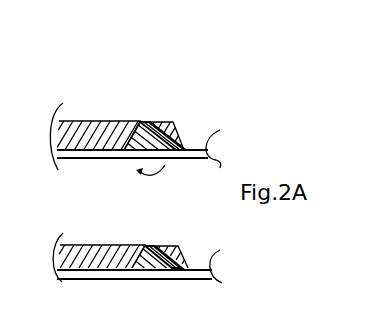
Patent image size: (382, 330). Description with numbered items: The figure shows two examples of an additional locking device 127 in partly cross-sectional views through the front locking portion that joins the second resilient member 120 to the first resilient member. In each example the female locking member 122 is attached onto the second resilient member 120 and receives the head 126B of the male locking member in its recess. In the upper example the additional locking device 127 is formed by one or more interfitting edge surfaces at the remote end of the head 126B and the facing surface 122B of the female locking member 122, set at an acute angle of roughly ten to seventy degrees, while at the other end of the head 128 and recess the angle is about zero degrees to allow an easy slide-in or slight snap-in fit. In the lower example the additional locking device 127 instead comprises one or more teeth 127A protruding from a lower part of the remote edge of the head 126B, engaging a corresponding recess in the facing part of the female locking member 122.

The second resilient member 120 is at (218, 130).
The female locking member 122 is at (167, 122).
The facing surface of the female locking member 122B is at (135, 133).
The head 126B is at (88, 120).
The additional locking device 127 is at (142, 112).
The teeth 127A is at (141, 268).
The groove 128 is at (183, 133).